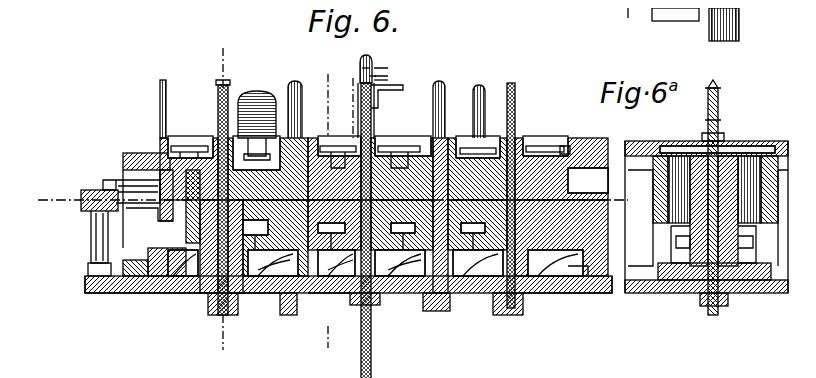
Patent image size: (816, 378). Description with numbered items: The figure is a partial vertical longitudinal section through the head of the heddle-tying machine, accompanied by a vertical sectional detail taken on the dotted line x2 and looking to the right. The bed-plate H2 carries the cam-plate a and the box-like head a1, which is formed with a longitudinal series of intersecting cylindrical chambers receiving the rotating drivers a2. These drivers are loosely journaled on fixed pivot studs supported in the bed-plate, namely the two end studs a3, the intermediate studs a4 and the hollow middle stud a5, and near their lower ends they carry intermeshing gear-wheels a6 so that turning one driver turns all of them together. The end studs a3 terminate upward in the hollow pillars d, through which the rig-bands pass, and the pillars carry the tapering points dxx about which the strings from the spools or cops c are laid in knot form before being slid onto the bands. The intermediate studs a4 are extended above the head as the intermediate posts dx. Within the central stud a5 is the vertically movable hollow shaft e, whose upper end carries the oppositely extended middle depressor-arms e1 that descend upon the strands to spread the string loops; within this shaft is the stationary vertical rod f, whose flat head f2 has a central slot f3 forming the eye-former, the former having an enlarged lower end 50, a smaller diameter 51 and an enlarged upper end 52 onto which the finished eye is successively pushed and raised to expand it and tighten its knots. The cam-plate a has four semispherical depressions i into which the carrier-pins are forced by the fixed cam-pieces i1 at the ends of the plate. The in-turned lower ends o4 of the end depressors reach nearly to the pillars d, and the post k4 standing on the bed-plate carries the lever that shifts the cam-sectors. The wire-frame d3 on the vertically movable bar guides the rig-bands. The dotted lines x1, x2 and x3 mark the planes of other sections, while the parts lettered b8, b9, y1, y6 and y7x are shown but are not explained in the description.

In FIG. 6, the cam-plate a is at (568, 262).
In FIG. 6A, the cam-plate a is at (652, 273).
In FIG. 6, the box-like head a1 is at (128, 145).
In FIG. 6A, the box-like head a1 is at (650, 218).
In FIG. 6, the rotating drivers a2 is at (150, 200).
In FIG. 6, the end pivot-studs a3 is at (575, 285).
In FIG. 6, the intermediate pivot-studs a4 is at (452, 286).
In FIG. 6, the middle pivot-stud a5 is at (345, 286).
In FIG. 6, the gear-wheels a6 is at (150, 240).
In FIG. 6A, the gear-wheels a6 is at (746, 286).
In FIG. 6, the clamp b8 is at (300, 150).
In FIG. 6, the clamp bar b9 is at (168, 140).
In FIG. 6, the spools or cops c is at (252, 84).
In FIG. 6, the hollow pillars d is at (210, 95).
In FIG. 6A, the hollow pillars d is at (712, 104).
In FIG. 6, the intermediate posts dx is at (438, 95).
In FIG. 6, the tapering points dxx is at (213, 74).
In FIG. 6, the wire-frame d3 is at (208, 287).
In FIG. 6, the hollow shaft e is at (366, 300).
In FIG. 6, the middle depressor-arms e1 is at (372, 90).
In FIG. 6, the vertical rod f is at (364, 355).
In FIG. 6, the flat head f2 is at (372, 60).
In FIG. 6, the central slot f3 is at (372, 73).
In FIG. 6, the bed-plate H2 is at (138, 285).
In FIG. 6A, the bed-plate H2 is at (672, 287).
In FIG. 6, the semispherical depressions i is at (178, 285).
In FIG. 6, the fixed cam-pieces i1 is at (98, 284).
In FIG. 6, the post k4 is at (88, 250).
In FIG. 6, the in-turned lower ends of end depressors o4 is at (563, 143).
In FIG. 6, the dotted section line x1 is at (333, 194).
In FIG. 6, the dotted section line x2 is at (230, 194).
In FIG. 6, the dotted section line x3 is at (315, 209).
In FIG. 6, the enlarged lower end of the former 50 is at (351, 108).
In FIG. 6, the smaller diameter of the former 51 is at (370, 75).
In FIG. 6, the enlarged upper end of the former 52 is at (362, 58).
In FIG. 6A, the gear y1 is at (730, 10).
In FIG. 6A, the lever y6 is at (605, 22).
In FIG. 6A, the link y7x is at (646, 12).